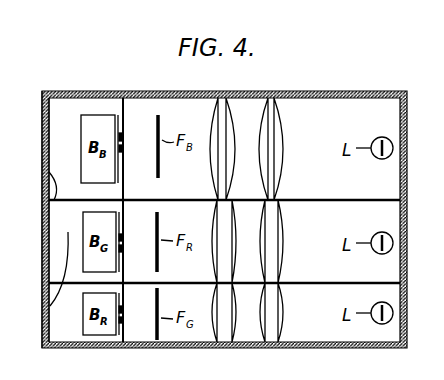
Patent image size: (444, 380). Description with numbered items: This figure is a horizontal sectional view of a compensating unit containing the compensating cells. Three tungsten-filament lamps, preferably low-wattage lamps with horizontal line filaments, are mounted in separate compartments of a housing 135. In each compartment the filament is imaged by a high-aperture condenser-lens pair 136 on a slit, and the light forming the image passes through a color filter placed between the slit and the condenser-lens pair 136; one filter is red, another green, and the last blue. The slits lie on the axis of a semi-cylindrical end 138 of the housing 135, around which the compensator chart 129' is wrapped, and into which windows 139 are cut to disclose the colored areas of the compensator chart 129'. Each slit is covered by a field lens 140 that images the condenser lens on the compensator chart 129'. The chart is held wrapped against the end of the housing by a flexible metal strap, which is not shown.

The housing 135 is at (347, 91).
The semi-cylindrical end 138 is at (42, 97).
The compensator chart 129' is at (23, 219).
The windows 139 is at (49, 238).
The field lens 140 is at (121, 144).
The condenser-lens pair 136 is at (226, 178).